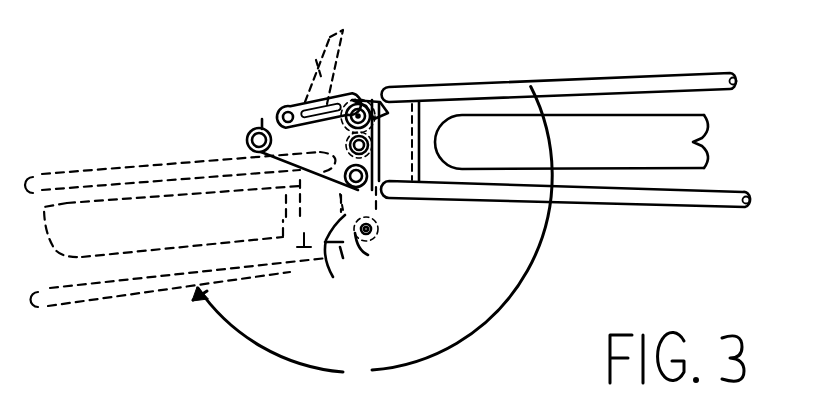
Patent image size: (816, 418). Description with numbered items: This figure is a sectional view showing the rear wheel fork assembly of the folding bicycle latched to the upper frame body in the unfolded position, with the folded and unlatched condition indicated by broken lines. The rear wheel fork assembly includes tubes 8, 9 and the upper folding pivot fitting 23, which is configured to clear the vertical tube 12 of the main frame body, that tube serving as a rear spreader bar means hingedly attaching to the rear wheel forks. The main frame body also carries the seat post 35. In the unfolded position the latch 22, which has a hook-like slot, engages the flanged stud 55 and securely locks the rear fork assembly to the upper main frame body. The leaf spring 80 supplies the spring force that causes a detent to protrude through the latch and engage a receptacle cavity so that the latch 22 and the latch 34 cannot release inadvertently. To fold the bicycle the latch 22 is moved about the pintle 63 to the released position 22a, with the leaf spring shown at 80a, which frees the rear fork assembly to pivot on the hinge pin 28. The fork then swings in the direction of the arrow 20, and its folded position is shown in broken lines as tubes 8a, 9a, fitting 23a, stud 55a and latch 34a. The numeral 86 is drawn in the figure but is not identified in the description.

The tube 8 is at (678, 199).
The tube 9 is at (648, 79).
The tube in folded position 8a is at (131, 161).
The tube in folded position 9a is at (119, 287).
The vertical tube 12 is at (316, 173).
The arrow 20 is at (556, 218).
The latch 22 is at (361, 76).
The latch in released position 22a is at (318, 41).
The upper folding pivot fitting 23 is at (421, 112).
The upper folding pivot fitting in folded position 23a is at (368, 255).
The hinge pin 28 is at (346, 193).
The latch 34 is at (710, 136).
The latch in folded position 34a is at (78, 232).
The seat post 35 is at (247, 140).
The flanged stud 55 is at (372, 102).
The flanged stud in folded position 55a is at (373, 229).
The pintle 63 is at (281, 118).
The leaf spring 80 is at (303, 100).
The leaf spring in released position 80a is at (311, 80).
The lower bracket 86 is at (344, 255).